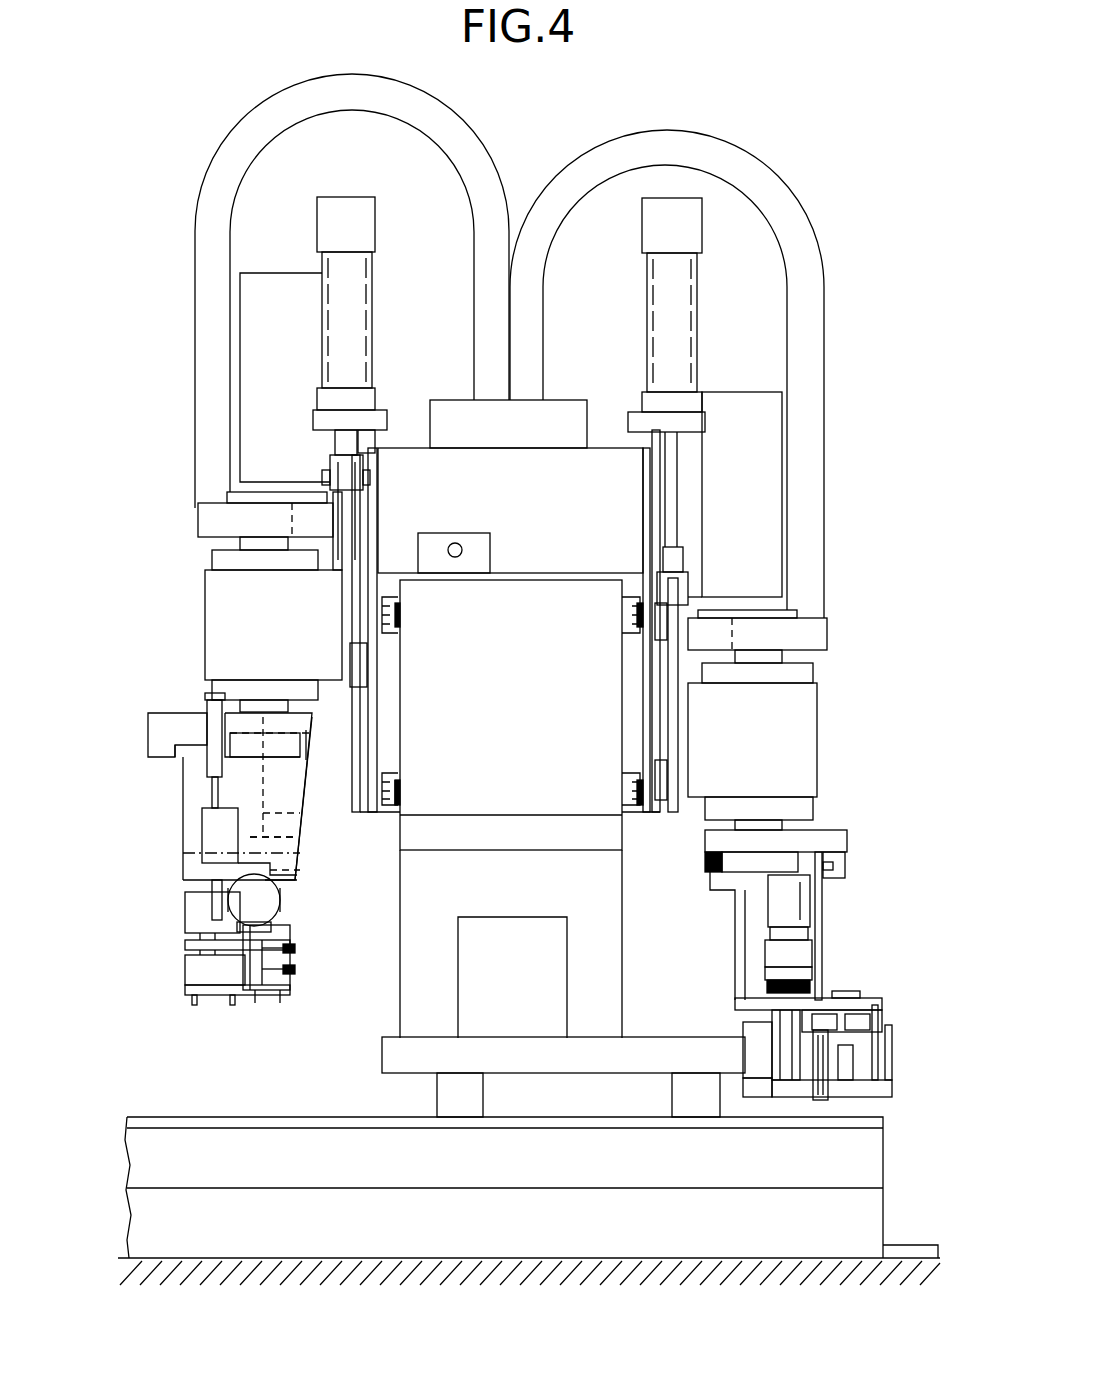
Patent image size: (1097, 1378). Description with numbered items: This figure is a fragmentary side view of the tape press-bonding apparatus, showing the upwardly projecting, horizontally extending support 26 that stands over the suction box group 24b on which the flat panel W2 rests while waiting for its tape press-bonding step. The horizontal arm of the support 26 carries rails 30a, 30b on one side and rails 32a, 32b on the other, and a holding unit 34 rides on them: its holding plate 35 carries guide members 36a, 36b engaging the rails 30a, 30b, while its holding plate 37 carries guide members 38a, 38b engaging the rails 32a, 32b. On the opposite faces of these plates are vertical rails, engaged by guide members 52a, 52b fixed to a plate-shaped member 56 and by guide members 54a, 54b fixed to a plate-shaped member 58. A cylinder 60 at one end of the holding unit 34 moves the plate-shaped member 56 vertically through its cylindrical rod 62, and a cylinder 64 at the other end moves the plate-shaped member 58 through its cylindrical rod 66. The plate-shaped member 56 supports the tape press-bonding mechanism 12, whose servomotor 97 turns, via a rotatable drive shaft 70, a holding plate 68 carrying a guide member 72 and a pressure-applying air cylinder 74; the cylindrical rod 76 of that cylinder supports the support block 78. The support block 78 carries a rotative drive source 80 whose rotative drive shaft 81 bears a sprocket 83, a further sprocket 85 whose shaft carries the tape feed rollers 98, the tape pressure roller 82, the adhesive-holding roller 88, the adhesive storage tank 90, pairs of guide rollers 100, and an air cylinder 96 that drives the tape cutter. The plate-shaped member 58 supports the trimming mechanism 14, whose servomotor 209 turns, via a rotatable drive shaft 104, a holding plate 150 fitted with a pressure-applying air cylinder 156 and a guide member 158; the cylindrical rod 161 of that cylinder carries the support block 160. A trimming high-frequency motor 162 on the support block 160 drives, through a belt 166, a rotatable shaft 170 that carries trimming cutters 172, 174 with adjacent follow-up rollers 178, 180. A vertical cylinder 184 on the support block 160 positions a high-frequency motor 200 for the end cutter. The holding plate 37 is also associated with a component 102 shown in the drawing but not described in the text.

The servomotor 209 is at (243, 330).
The cylinder 64 is at (358, 342).
The cylinder 60 is at (683, 318).
The cylindrical rod 66 is at (335, 441).
The holding plate 37 is at (377, 472).
The guide member 54a is at (360, 498).
The holding unit 34 is at (548, 516).
The holding plate 35 is at (643, 498).
The cylindrical rod 62 is at (678, 524).
The guide member 36a is at (638, 600).
The motor unit 102 is at (212, 622).
The plate-shaped member 58 is at (340, 576).
The guide member 38a is at (398, 600).
The rail 32a is at (398, 620).
The rail 30a is at (622, 614).
The guide member 52a is at (655, 625).
The guide member 54b is at (355, 665).
The holding plate 150 is at (170, 720).
The rotatable drive shaft 104 is at (272, 713).
The guide member 158 is at (312, 745).
The pressure-applying air cylinder 156 is at (160, 750).
The cylindrical rod 161 is at (207, 770).
The trimming high-frequency motor 162 is at (300, 800).
The cylinder 184 is at (202, 832).
The belt 166 is at (305, 845).
The support block 160 is at (180, 865).
The rotatable shaft 170 is at (300, 870).
The high-frequency motor 200 is at (272, 892).
The trimming mechanism 14 is at (183, 912).
The trimming cutter 172 is at (282, 938).
The panel-upper/lower-sides follow-up roller 178 is at (296, 948).
The panel-upper/lower-sides follow-up roller 180 is at (296, 970).
The trimming cutter 174 is at (265, 990).
The rail 32b is at (398, 790).
The guide member 38b is at (398, 814).
The rail 30b is at (622, 790).
The guide member 36b is at (637, 810).
The guide member 52b is at (661, 800).
The plate-shaped member 56 is at (679, 719).
The servomotor 97 is at (817, 700).
The rotatable drive shaft 70 is at (755, 820).
The holding plate 68 is at (835, 830).
The pressure-applying air cylinder 74 is at (845, 856).
The cylindrical rod 76 is at (845, 870).
The tape press-bonding mechanism 12 is at (840, 900).
The guide member 72 is at (728, 880).
The rotative drive source 80 is at (810, 906).
The support block 78 is at (808, 939).
The rotative drive shaft 81 is at (812, 972).
The sprocket 85 is at (855, 993).
The sprocket 83 is at (765, 990).
The air cylinder 96 is at (760, 1010).
The guide rollers 100 is at (879, 1032).
The tape pressure roller 82 is at (745, 1052).
The support 26 is at (605, 905).
The panel W2 is at (385, 1060).
The suction box group 24b is at (460, 1118).
The adhesive-holding roller 88 is at (785, 1082).
The adhesive storage tank 90 is at (812, 1100).
The tape feed rollers 98 is at (848, 1082).